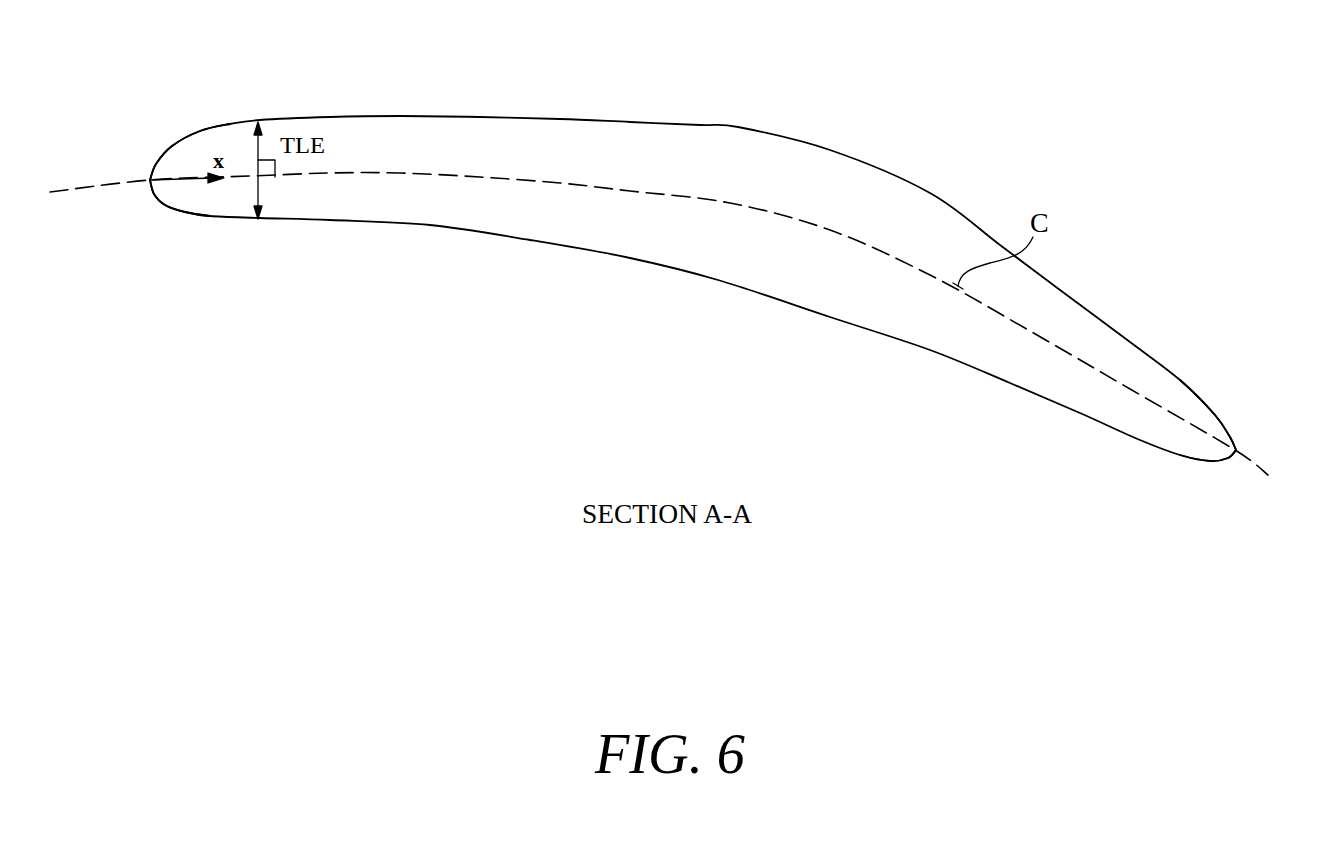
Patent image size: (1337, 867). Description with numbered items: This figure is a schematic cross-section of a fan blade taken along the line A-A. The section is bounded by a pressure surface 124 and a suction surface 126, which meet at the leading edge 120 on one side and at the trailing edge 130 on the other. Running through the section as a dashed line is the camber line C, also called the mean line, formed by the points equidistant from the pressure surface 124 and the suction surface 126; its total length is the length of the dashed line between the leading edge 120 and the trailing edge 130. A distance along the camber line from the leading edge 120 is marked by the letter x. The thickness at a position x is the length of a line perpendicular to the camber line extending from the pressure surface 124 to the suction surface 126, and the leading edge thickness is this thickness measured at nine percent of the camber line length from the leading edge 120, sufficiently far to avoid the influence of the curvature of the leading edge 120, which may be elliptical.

The leading edge 120 is at (150, 180).
The pressure surface 124 is at (718, 280).
The suction surface 126 is at (738, 127).
The trailing edge 130 is at (1236, 450).